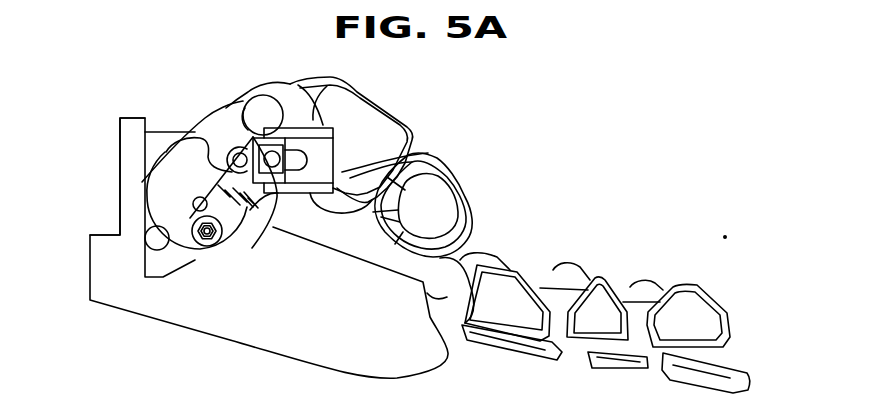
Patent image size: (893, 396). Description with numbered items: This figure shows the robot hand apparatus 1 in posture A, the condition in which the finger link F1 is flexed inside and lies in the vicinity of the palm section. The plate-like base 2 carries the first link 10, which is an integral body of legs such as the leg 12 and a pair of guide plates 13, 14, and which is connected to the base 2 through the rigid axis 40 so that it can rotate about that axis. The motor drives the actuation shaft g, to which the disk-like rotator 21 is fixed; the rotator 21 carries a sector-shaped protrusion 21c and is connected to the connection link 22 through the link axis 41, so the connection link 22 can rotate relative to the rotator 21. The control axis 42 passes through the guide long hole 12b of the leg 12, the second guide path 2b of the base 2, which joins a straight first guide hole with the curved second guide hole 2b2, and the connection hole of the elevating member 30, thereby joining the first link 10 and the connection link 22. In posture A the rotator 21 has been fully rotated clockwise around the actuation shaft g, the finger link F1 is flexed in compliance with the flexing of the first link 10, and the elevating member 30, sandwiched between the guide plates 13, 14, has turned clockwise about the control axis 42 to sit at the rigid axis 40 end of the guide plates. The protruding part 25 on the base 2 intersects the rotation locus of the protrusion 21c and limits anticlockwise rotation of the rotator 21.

The robot hand apparatus 1 is at (508, 146).
The base 2 is at (212, 113).
The second guide path 2b is at (260, 105).
The second guide hole 2b2 is at (266, 156).
The first link 10 is at (340, 172).
The leg 12 is at (322, 148).
The guide long hole 12b is at (334, 146).
The guide plate 13 is at (324, 128).
The guide plate 14 is at (404, 200).
The rotator 21 is at (185, 162).
The protrusion 21c is at (167, 230).
The connection link 22 is at (244, 218).
The protruding part 25 is at (146, 236).
The elevating member 30 is at (250, 215).
The rigid axis 40 is at (203, 118).
The link axis 41 is at (238, 222).
The control axis 42 is at (296, 127).
The actuation shaft g is at (193, 204).
The posture A is at (480, 223).
The finger link F1 is at (428, 133).